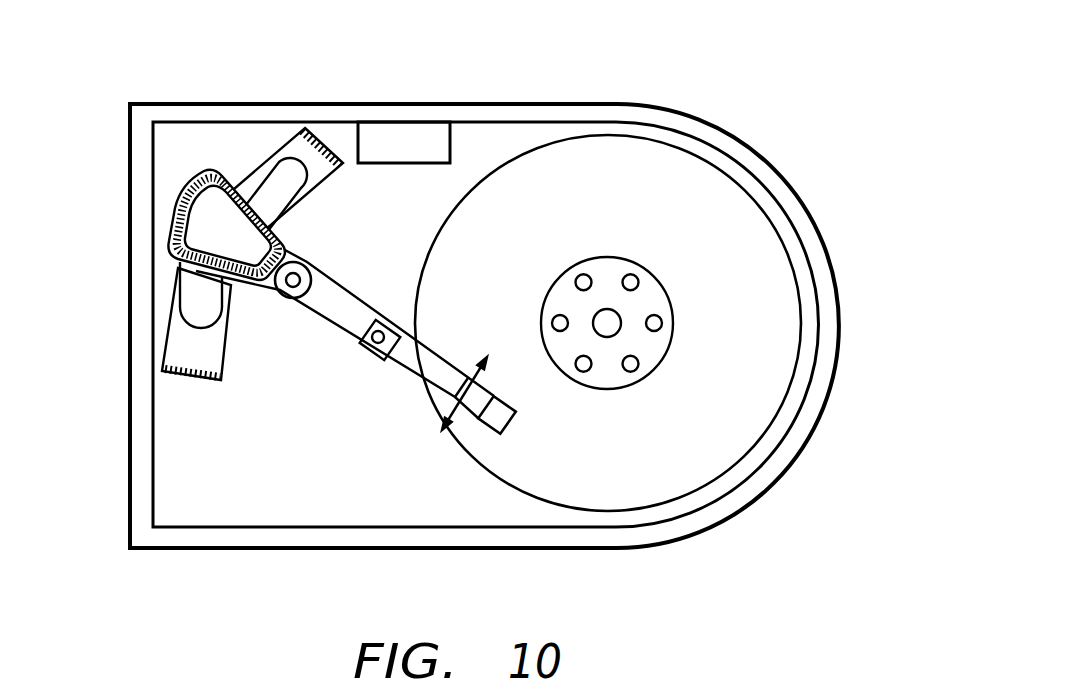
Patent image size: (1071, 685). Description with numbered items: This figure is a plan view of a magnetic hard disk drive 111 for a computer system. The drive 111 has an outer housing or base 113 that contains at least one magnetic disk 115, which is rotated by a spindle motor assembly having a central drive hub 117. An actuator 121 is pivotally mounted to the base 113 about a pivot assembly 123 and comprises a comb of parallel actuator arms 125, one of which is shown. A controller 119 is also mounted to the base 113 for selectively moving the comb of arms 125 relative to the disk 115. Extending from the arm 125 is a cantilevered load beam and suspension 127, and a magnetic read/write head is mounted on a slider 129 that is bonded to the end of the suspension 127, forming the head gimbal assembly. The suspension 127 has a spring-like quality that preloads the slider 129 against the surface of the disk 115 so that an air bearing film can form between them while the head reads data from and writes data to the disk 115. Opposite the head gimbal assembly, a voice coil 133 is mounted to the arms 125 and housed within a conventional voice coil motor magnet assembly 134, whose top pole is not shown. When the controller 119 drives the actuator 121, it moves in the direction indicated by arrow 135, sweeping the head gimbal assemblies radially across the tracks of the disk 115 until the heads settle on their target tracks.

The magnetic hard disk drive 111 is at (826, 50).
The base 113 is at (472, 102).
The magnetic disk 115 is at (745, 238).
The central drive hub 117 is at (608, 257).
The controller 119 is at (382, 132).
The actuator 121 is at (272, 492).
The pivot assembly 123 is at (312, 275).
The actuator arm 125 is at (343, 284).
The load beam and suspension 127 is at (433, 353).
The slider 129 is at (509, 428).
The voice coil 133 is at (190, 190).
The voice coil motor magnet assembly 134 is at (308, 168).
The arrow indicating actuator movement 135 is at (452, 395).